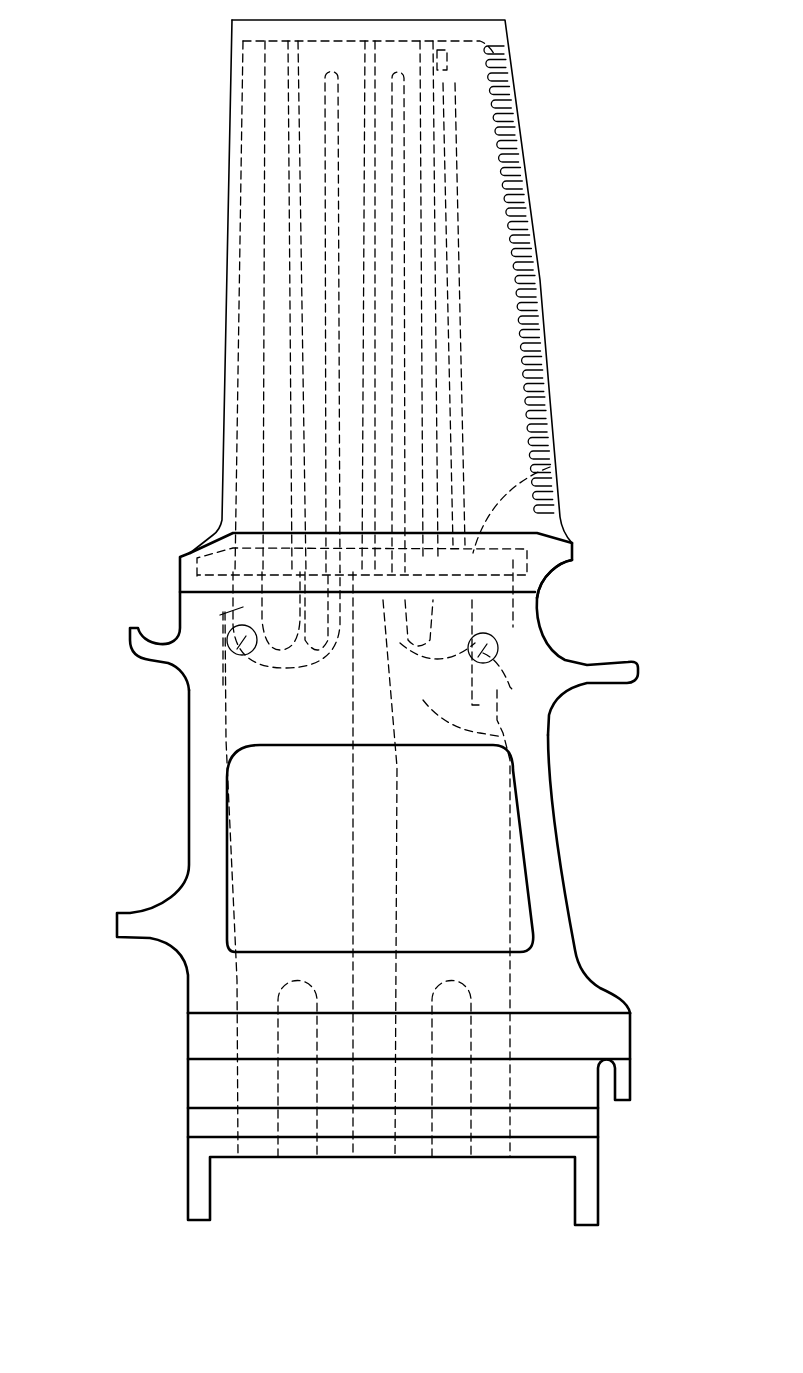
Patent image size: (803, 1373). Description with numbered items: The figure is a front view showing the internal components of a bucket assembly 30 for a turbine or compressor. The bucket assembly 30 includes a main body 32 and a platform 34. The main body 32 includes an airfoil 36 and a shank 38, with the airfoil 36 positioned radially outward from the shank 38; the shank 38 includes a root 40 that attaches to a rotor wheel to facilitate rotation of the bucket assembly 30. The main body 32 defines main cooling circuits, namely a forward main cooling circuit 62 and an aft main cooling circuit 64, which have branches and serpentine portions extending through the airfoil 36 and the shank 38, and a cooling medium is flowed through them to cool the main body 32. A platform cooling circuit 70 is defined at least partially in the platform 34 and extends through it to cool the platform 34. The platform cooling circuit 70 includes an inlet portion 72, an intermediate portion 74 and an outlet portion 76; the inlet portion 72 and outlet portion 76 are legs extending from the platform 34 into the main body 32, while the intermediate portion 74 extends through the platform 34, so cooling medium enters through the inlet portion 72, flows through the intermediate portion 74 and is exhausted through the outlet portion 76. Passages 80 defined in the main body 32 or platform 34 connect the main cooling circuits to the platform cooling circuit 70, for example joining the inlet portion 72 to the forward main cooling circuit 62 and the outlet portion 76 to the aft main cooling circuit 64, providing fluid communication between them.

The bucket assembly 30 is at (184, 123).
The main body 32 is at (158, 750).
The platform 34 is at (160, 571).
The airfoil 36 is at (210, 266).
The shank 38 is at (185, 828).
The root 40 is at (165, 1189).
The forward main cooling circuit 62 is at (262, 985).
The aft main cooling circuit 64 is at (480, 828).
The platform cooling circuit 70 is at (500, 552).
The inlet portion 72 is at (232, 606).
The intermediate portion 74 is at (562, 457).
The outlet portion 76 is at (540, 630).
The passage 80 is at (212, 655).